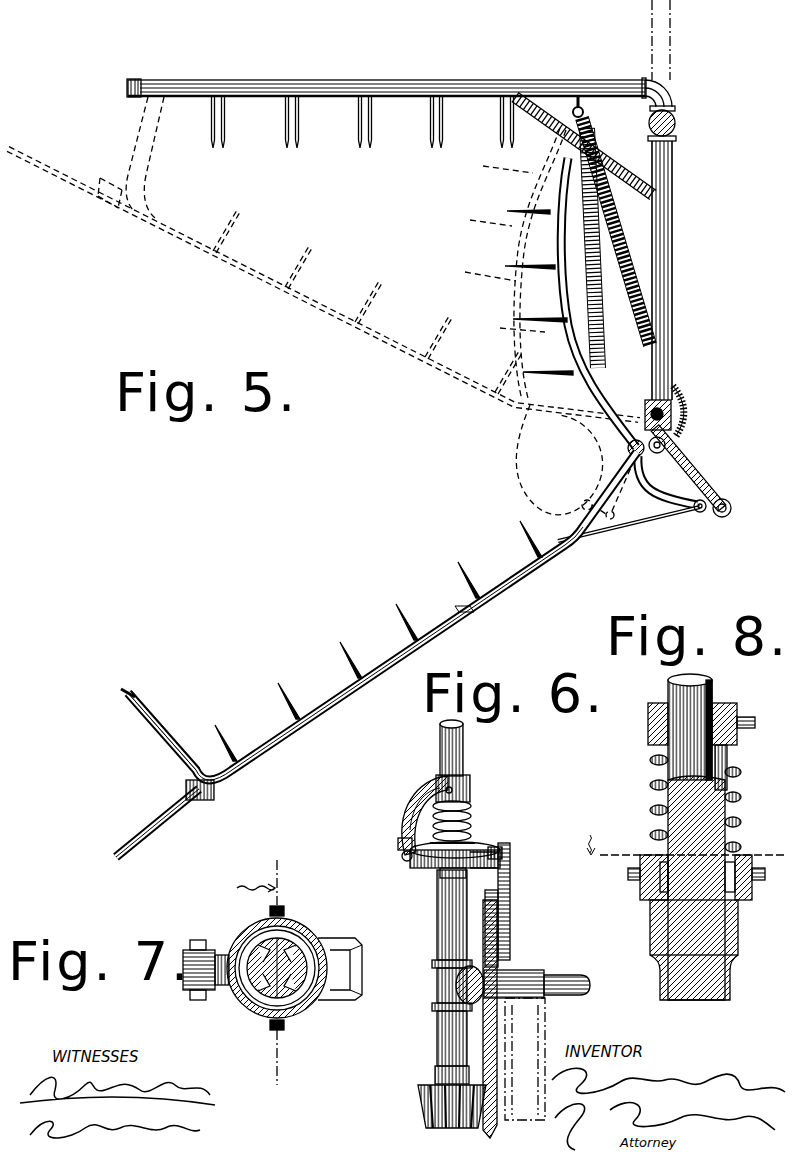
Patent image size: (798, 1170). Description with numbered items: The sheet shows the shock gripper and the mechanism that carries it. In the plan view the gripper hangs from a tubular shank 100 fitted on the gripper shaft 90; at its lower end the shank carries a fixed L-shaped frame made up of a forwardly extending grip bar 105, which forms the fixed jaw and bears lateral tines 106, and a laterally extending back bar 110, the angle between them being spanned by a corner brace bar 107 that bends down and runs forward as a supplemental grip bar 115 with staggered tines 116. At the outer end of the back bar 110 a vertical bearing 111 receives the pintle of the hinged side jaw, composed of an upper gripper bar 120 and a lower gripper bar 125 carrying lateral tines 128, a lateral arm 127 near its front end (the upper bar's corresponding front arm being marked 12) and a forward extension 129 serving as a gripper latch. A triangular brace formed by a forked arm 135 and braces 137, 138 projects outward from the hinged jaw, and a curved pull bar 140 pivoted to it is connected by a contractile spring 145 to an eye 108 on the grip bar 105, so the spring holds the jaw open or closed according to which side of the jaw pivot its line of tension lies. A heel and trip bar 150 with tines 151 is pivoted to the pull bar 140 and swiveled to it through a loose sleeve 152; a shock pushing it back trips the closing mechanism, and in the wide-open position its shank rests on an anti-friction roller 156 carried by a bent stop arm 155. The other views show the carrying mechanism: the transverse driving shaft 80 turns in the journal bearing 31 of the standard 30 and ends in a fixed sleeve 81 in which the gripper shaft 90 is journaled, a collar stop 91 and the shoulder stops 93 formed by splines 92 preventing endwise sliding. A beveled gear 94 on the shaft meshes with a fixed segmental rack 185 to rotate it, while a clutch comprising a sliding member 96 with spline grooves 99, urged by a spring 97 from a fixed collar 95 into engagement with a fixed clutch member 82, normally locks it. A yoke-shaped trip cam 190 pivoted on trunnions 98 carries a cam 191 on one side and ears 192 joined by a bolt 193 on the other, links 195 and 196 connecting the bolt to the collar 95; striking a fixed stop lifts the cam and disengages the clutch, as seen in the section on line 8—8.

In FIG. 5, the grip bar 105 is at (548, 83).
In FIG. 5, the supplemental grip bar 115 is at (127, 90).
In FIG. 5, the tines 116 is at (285, 131).
In FIG. 5, the tines 106 is at (503, 141).
In FIG. 5, the tubular shank 100 is at (676, 104).
In FIG. 5, the gripper shaft 90 is at (676, 124).
In FIG. 6, the gripper shaft 90 is at (448, 752).
In FIG. 7, the gripper shaft 90 is at (258, 986).
In FIG. 8, the gripper shaft 90 is at (680, 699).
In FIG. 5, the back bar 110 is at (664, 252).
In FIG. 5, the corner brace bar 107 is at (611, 163).
In FIG. 5, the eye 108 is at (582, 104).
In FIG. 5, the contractile spring 145 is at (642, 226).
In FIG. 5, the heel bar 150 is at (568, 337).
In FIG. 5, the tines 151 is at (535, 316).
In FIG. 5, the vertical bearing 111 is at (675, 410).
In FIG. 5, the bent arm 155 is at (684, 430).
In FIG. 5, the anti-friction roller 156 is at (666, 445).
In FIG. 5, the forked arm 135 is at (698, 470).
In FIG. 5, the sleeve 152 is at (628, 450).
In FIG. 5, the pull bar 140 is at (680, 500).
In FIG. 5, the brace 138 is at (640, 524).
In FIG. 5, the brace 137 is at (610, 521).
In FIG. 5, the gripper bar 120 is at (450, 614).
In FIG. 5, the gripper bar 125 is at (466, 614).
In FIG. 5, the tines 128 is at (280, 696).
In FIG. 5, the frame bar 12 is at (155, 726).
In FIG. 5, the lateral arm 127 is at (158, 742).
In FIG. 5, the forward extension 129 is at (158, 823).
In FIG. 6, the fixed collar 95 is at (470, 787).
In FIG. 8, the fixed collar 95 is at (653, 724).
In FIG. 6, the link 195 is at (428, 786).
In FIG. 6, the link 196 is at (412, 804).
In FIG. 6, the splines 92 is at (472, 814).
In FIG. 7, the splines 92 is at (250, 948).
In FIG. 8, the splines 92 is at (652, 792).
In FIG. 6, the spring 97 is at (470, 806).
In FIG. 8, the spring 97 is at (738, 774).
In FIG. 6, the shoulder stops 93 is at (470, 834).
In FIG. 8, the shoulder stops 93 is at (750, 889).
In FIG. 6, the trip cam 190 is at (420, 864).
In FIG. 7, the trip cam 190 is at (248, 918).
In FIG. 8, the trip cam 190 is at (640, 868).
In FIG. 6, the ears 192 is at (406, 840).
In FIG. 7, the ears 192 is at (186, 977).
In FIG. 6, the bolt 193 is at (402, 856).
In FIG. 7, the bolt 193 is at (200, 1000).
In FIG. 6, the sliding clutch member 96 is at (500, 850).
In FIG. 7, the sliding clutch member 96 is at (295, 940).
In FIG. 8, the sliding clutch member 96 is at (648, 888).
In FIG. 6, the fixed clutch member 82 is at (442, 870).
In FIG. 8, the fixed clutch member 82 is at (738, 929).
In FIG. 6, the trunnions 98 is at (442, 878).
In FIG. 7, the trunnions 98 is at (283, 906).
In FIG. 8, the trunnions 98 is at (630, 876).
In FIG. 6, the cam 191 is at (512, 860).
In FIG. 6, the segmental rack 185 is at (486, 1128).
In FIG. 6, the sleeve 81 is at (448, 940).
In FIG. 8, the sleeve 81 is at (730, 982).
In FIG. 6, the journal bearing 31 is at (522, 974).
In FIG. 6, the transverse shaft 80 is at (566, 977).
In FIG. 6, the standard 30 is at (546, 1036).
In FIG. 6, the collar stop 91 is at (438, 1020).
In FIG. 6, the beveled gear 94 is at (425, 1098).
In FIG. 7, the section line 8— 8 is at (277, 974).
In FIG. 7, the spline grooves 99 is at (303, 950).